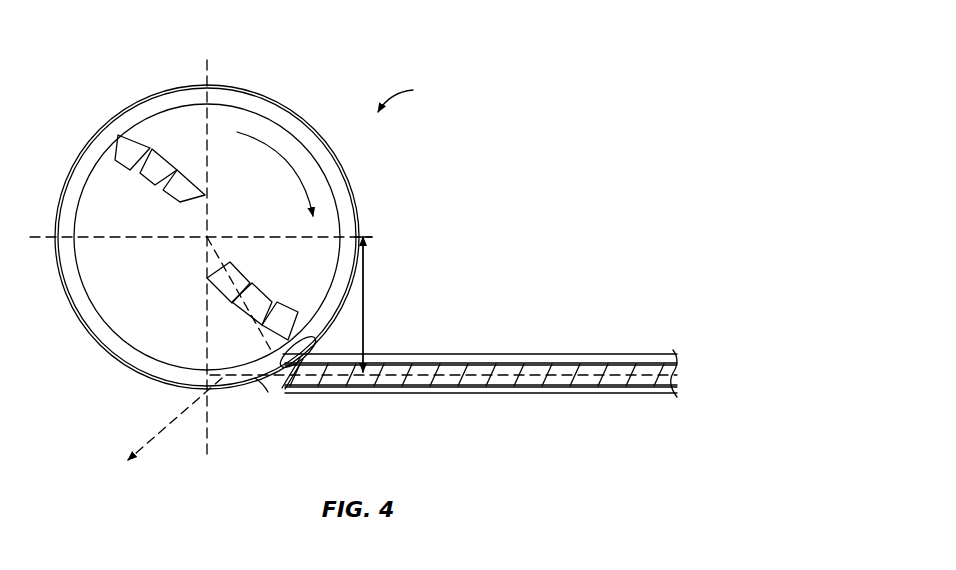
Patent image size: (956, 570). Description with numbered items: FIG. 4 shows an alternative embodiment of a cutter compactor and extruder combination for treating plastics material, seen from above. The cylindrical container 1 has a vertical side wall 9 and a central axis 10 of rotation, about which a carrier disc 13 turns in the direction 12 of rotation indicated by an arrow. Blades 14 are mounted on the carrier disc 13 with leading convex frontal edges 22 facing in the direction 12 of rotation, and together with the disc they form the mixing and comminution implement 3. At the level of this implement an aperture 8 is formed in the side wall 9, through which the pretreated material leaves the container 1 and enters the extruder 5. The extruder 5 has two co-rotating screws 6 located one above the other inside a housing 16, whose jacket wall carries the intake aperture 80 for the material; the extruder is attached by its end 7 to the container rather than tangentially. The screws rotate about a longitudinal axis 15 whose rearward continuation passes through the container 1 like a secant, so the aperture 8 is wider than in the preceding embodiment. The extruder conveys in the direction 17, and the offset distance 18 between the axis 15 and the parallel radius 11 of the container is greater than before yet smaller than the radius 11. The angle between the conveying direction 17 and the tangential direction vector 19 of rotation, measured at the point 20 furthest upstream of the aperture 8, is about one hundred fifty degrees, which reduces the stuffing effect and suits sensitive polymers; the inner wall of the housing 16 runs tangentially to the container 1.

The container 1 is at (404, 95).
The mixing and/or comminution implement 3 is at (126, 306).
The extruder 5 is at (518, 332).
The screws 6 is at (495, 386).
The end of extruder 7 is at (278, 362).
The aperture 8 is at (212, 370).
The side wall 9 is at (222, 84).
The axis of rotation 10 is at (208, 237).
The radius 11 is at (364, 237).
The direction of rotation 12 is at (282, 157).
The carrier disc 13 is at (133, 286).
The blades 14 is at (123, 167).
The longitudinal axis 15 is at (548, 374).
The housing 16 is at (625, 393).
The direction of conveying 17 is at (450, 361).
The offset distance 18 is at (365, 305).
The direction vector 19 is at (160, 440).
The point 20 is at (305, 350).
The leading convex frontal edges 22 is at (215, 285).
The intake aperture 80 is at (215, 390).